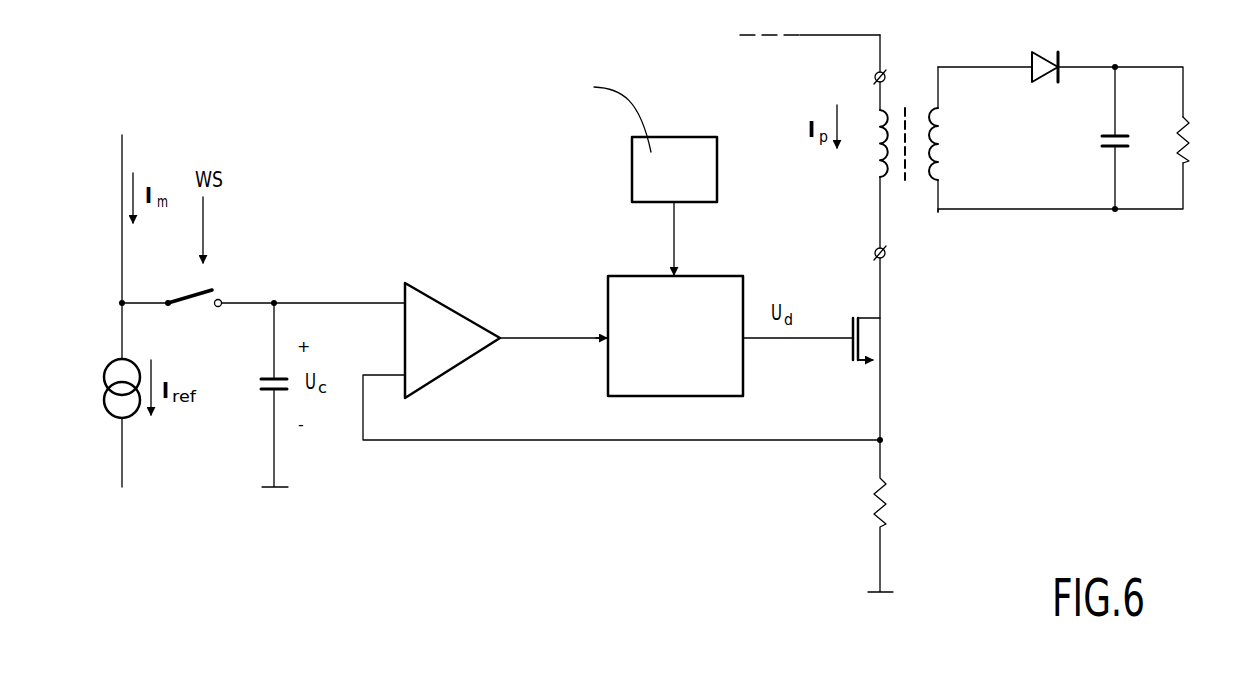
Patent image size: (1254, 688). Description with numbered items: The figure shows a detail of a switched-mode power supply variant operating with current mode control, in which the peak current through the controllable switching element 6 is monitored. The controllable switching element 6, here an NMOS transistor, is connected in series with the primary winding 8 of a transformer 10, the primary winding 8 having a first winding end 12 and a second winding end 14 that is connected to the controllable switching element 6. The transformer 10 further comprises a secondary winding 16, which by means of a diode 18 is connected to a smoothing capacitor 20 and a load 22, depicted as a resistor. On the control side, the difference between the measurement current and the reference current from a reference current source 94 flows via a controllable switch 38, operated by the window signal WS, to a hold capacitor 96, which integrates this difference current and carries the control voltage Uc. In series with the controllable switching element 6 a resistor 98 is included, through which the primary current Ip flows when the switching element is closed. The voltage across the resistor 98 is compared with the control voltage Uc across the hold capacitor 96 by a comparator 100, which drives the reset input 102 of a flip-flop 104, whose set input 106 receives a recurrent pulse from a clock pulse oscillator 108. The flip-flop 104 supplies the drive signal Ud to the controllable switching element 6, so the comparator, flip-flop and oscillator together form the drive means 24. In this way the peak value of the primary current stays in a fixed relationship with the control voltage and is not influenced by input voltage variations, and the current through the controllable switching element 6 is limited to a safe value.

The controllable switching element 6 is at (872, 342).
The primary winding 8 is at (876, 155).
The transformer 10 is at (899, 90).
The first winding end 12 is at (874, 76).
The second winding end 14 is at (886, 255).
The secondary winding 16 is at (930, 143).
The diode 18 is at (1040, 54).
The smoothing capacitor 20 is at (1100, 140).
The load 22 is at (1192, 140).
The drive means 24 is at (566, 244).
The controllable switch 38 is at (214, 288).
The reference current source 94 is at (112, 417).
The hold capacitor 96 is at (260, 385).
The resistor 98 is at (888, 505).
The comparator 100 is at (437, 298).
The reset input 102 is at (600, 352).
The flip-flop 104 is at (673, 398).
The set input 106 is at (679, 273).
The clock pulse oscillator 108 is at (671, 135).